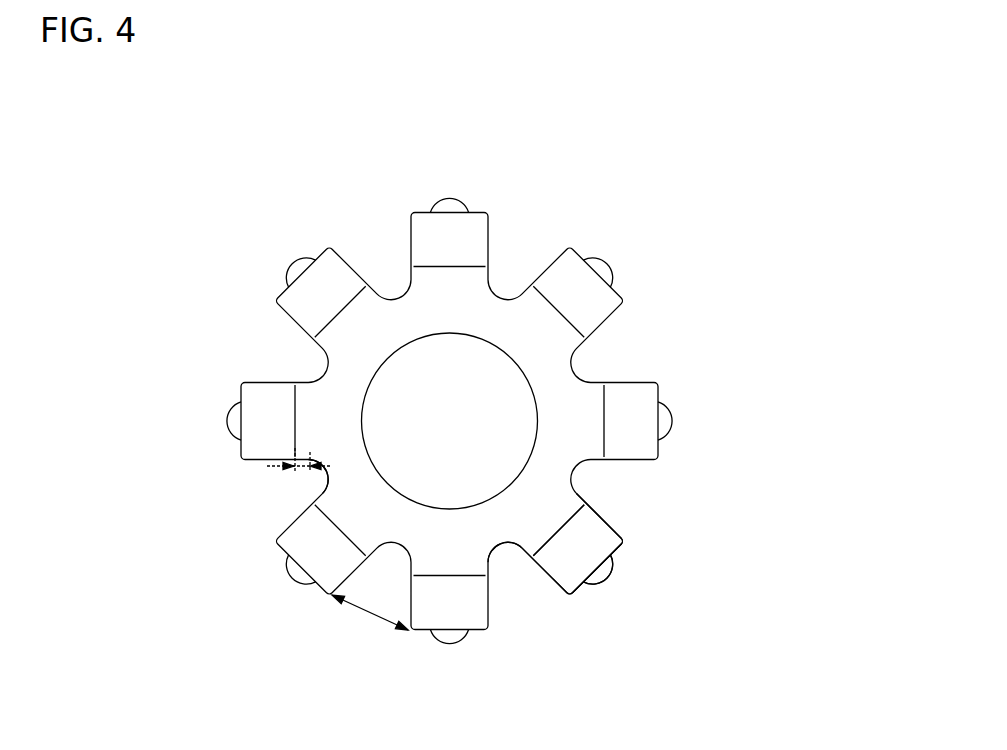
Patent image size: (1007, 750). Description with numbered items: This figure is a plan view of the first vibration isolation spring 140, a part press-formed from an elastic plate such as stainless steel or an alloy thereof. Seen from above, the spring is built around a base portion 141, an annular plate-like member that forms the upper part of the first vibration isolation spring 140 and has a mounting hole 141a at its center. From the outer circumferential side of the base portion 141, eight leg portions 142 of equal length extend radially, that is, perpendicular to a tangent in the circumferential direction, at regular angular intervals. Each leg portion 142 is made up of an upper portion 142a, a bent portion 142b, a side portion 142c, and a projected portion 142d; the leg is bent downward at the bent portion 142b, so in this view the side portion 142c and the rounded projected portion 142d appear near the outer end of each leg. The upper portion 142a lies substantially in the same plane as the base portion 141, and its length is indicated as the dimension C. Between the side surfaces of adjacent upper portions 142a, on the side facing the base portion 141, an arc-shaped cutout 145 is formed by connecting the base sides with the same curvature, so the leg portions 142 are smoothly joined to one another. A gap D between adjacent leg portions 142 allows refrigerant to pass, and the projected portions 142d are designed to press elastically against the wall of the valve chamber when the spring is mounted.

The first vibration isolation spring 140 is at (684, 176).
The base portion 141 is at (412, 327).
The mounting hole 141a is at (427, 390).
The leg portion 142 is at (649, 532).
The upper portion 142a is at (575, 498).
The bent portion 142b is at (588, 525).
The side portion 142c is at (590, 554).
The projected portion 142d is at (610, 577).
The cutout 145 is at (326, 472).